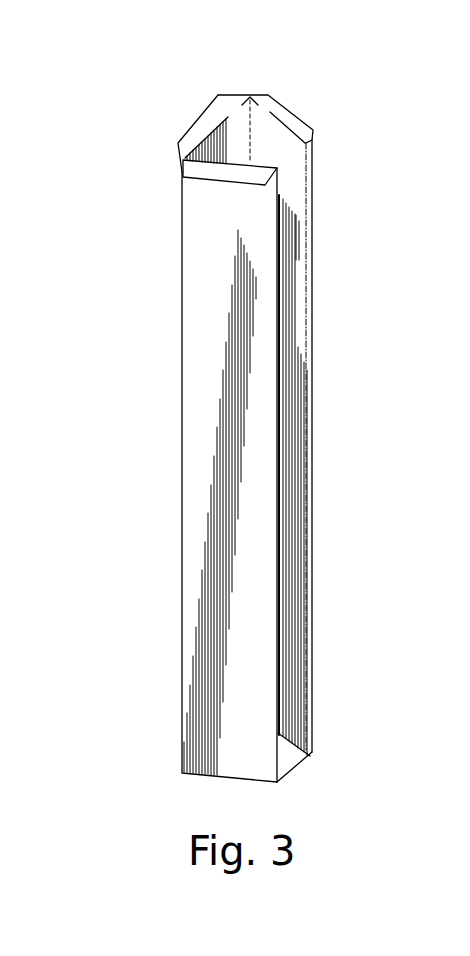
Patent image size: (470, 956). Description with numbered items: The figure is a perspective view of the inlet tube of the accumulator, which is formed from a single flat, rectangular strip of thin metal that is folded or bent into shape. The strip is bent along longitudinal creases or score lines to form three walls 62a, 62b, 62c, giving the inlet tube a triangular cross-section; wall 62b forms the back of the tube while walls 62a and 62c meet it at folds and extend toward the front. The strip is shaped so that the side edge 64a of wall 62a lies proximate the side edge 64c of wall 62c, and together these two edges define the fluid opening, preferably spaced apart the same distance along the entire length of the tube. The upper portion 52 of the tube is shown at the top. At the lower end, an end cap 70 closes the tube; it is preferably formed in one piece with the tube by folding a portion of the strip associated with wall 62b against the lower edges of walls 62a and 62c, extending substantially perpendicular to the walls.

The top cap 52 is at (263, 93).
The wall 62a is at (210, 207).
The wall 62b is at (223, 142).
The wall 62c is at (278, 157).
The side edge 64a is at (275, 562).
The side edge 64c is at (312, 447).
The end cap 70 is at (285, 753).